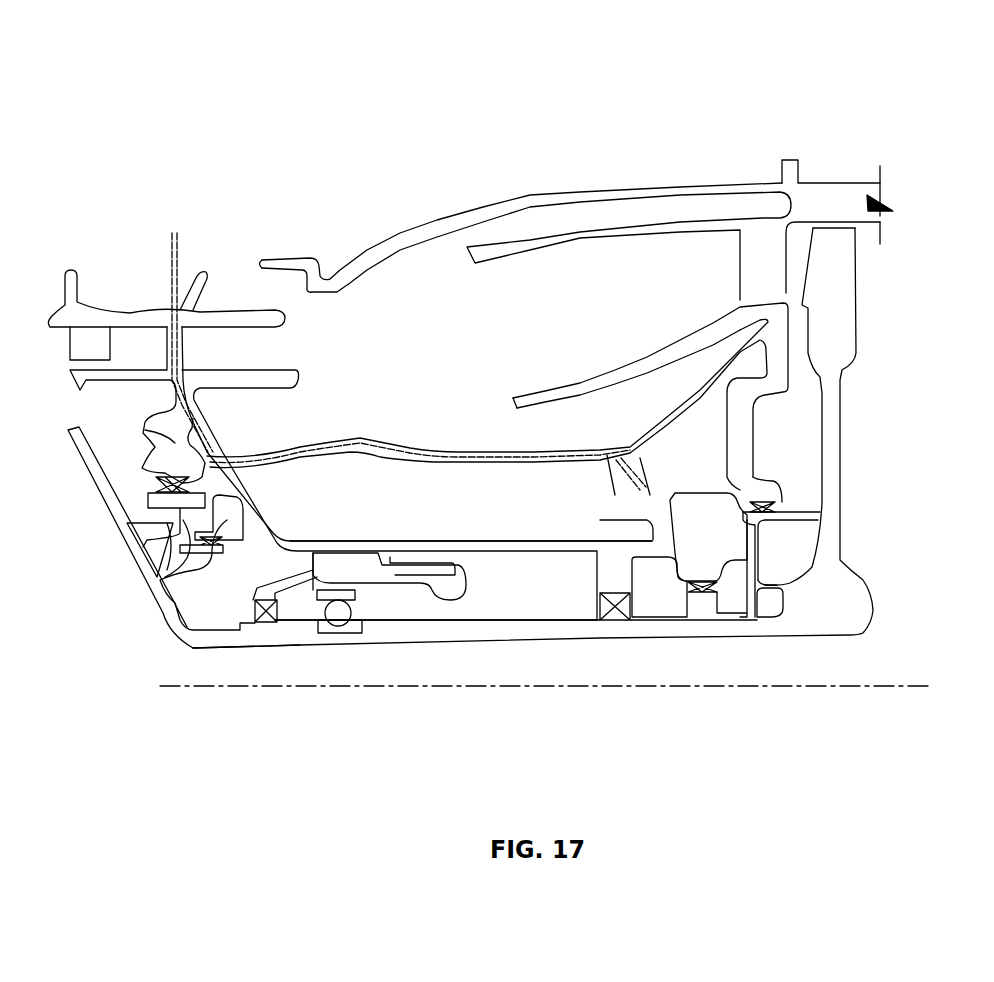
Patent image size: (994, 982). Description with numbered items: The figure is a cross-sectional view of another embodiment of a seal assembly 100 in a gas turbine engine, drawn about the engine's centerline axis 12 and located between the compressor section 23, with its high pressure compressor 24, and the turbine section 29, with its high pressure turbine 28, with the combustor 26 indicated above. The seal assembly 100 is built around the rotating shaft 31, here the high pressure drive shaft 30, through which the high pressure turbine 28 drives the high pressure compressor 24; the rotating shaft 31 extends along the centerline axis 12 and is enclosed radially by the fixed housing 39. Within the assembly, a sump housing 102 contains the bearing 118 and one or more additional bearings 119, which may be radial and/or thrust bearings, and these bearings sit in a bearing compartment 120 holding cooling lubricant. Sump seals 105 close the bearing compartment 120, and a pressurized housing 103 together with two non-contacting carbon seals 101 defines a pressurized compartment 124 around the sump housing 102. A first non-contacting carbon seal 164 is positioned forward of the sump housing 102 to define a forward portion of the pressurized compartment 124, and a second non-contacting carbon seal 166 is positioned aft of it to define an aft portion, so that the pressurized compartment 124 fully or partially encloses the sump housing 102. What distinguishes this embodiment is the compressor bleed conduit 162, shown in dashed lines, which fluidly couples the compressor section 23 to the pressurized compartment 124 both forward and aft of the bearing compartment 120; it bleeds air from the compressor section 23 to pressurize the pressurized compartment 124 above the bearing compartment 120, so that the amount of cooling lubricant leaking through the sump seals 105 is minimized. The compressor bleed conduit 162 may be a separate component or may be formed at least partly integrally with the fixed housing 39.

The centerline axis 12 is at (870, 688).
The compressor section 23 is at (27, 226).
The high pressure compressor 24 is at (92, 226).
The combustor 26 is at (484, 110).
The high pressure turbine 28 is at (795, 109).
The turbine section 29 is at (799, 56).
The high pressure drive shaft 30 is at (480, 640).
The rotating shaft 31 is at (644, 650).
The fixed housing 39 is at (150, 412).
The seal assembly 100 is at (400, 658).
The non-contacting carbon seal 101 is at (870, 473).
The sump housing 102 is at (463, 538).
The pressurized housing 103 is at (157, 523).
The sump seal 105 is at (200, 553).
The bearing 118 is at (336, 656).
The additional bearings 119 is at (273, 630).
The bearing compartment 120 is at (541, 556).
The pressurized compartment 124 is at (155, 440).
The compressor bleed conduit 162 is at (172, 292).
The first non-contacting carbon seal 164 is at (152, 492).
The second non-contacting carbon seal 166 is at (721, 564).